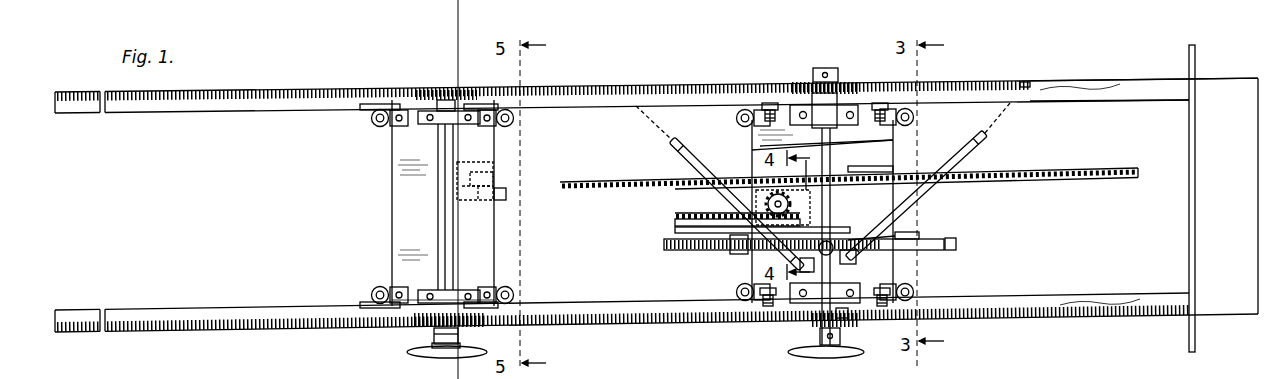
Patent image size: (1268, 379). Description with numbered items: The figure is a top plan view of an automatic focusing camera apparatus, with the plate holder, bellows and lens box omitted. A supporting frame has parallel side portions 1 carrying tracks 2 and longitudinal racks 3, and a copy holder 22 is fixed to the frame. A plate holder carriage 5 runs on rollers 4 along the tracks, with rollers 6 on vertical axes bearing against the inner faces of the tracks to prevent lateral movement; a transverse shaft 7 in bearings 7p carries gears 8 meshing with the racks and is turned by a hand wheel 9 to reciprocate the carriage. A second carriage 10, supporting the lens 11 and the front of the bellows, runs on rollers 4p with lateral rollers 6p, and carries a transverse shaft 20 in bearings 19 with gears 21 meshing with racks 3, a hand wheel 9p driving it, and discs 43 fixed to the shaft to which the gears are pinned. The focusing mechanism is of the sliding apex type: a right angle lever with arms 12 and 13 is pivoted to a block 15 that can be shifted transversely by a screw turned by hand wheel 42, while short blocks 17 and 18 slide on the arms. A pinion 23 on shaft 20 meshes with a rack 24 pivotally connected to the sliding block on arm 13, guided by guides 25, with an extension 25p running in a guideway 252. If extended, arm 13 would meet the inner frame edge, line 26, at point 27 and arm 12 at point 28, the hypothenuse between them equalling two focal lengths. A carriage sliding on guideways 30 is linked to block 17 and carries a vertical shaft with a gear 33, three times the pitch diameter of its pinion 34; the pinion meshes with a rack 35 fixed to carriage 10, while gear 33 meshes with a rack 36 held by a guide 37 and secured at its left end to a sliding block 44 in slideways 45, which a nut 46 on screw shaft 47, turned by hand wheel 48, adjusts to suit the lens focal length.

The side portion of supporting frame 1 is at (1070, 93).
The track 2 is at (571, 103).
The longitudinal rack 3 is at (705, 88).
The roller 4 is at (392, 108).
The roller 4p is at (762, 306).
The carriage 5 is at (392, 210).
The roller 6 is at (515, 124).
The lateral roller 6p is at (736, 118).
The shaft 7 is at (437, 198).
The bearing 7p is at (433, 125).
The gear 8 is at (436, 92).
The hand wheel 9 is at (424, 353).
The hand wheel 9p is at (812, 355).
The second carriage 10 is at (893, 268).
The lens 11 is at (860, 200).
The arm of bell crank lever 12 is at (690, 156).
The arm of bell crank lever 13 is at (968, 150).
The block 15 is at (856, 262).
The short block 17 is at (800, 265).
The short block 18 is at (900, 226).
The bearing 19 is at (840, 120).
The transverse shaft 20 is at (838, 141).
The gear 21 is at (840, 86).
The copy holder 22 is at (1197, 226).
The pinion 23 is at (860, 230).
The rack 24 is at (668, 251).
The guide 25 is at (738, 254).
The extension of rack 25p is at (953, 238).
The guideway 252 is at (914, 234).
The line 26 is at (1080, 100).
The point 27 is at (1012, 104).
The point 28 is at (640, 108).
The guideway 30 is at (700, 232).
The gear 33 is at (808, 180).
The pinion 34 is at (768, 206).
The rack 35 is at (675, 216).
The rack 36 is at (583, 180).
The guide 37 is at (882, 168).
The hand wheel 42 is at (860, 322).
The disc 43 is at (818, 334).
The sliding block 44 is at (480, 170).
The slideway 45 is at (496, 170).
The nut 46 is at (483, 198).
The screw shaft 47 is at (492, 215).
The hand wheel 48 is at (506, 196).